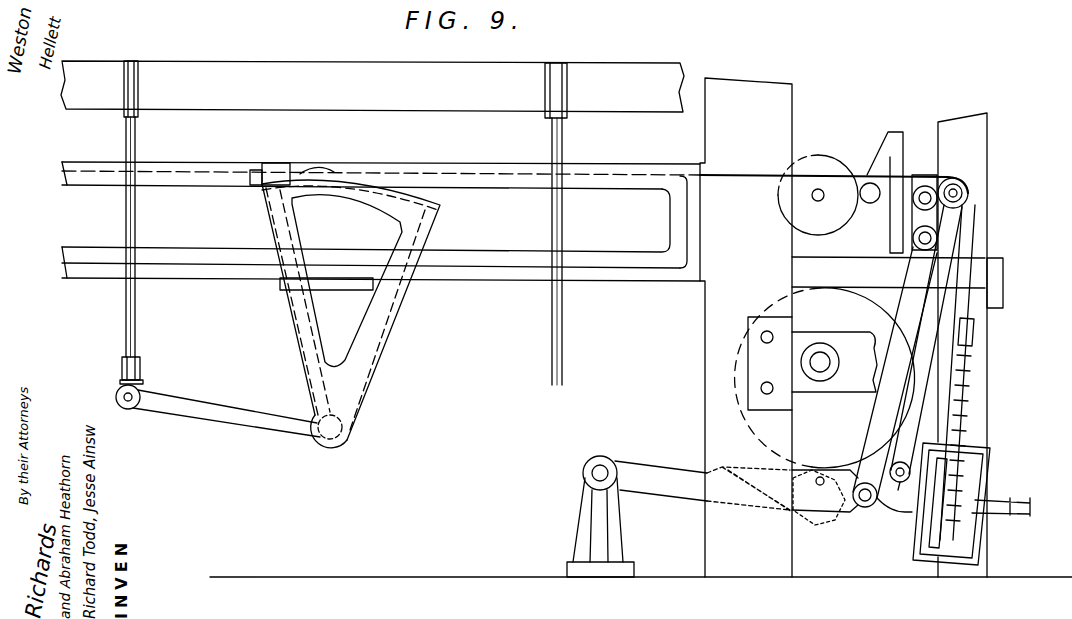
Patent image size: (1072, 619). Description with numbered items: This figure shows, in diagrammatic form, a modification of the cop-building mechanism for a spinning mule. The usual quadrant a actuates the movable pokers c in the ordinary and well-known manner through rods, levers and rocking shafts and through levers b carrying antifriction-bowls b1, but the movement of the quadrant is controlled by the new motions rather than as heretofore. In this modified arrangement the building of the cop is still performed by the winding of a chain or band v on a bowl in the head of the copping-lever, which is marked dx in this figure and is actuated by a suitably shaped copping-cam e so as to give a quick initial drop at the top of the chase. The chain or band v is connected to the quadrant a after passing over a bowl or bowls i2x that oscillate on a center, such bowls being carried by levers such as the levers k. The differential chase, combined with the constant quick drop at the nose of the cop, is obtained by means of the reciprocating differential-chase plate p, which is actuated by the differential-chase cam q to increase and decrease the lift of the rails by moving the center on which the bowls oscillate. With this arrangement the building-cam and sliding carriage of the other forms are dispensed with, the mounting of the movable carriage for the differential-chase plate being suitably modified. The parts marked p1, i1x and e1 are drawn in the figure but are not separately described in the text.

The quadrant a is at (388, 337).
The levers b is at (282, 392).
The antifriction-bowls b1 is at (143, 387).
The movable pokers c is at (141, 139).
The differential-chase cam q is at (814, 170).
The reciprocating differential-chase plate p is at (930, 140).
The guide rollers p1 is at (924, 219).
The bowl or bowls i2x is at (968, 186).
The pulley spindle i1x is at (956, 196).
The levers k is at (922, 407).
The chain or band v is at (965, 427).
The copping-lever dx is at (887, 503).
The copping-cam e is at (825, 378).
The crank plate e1 is at (866, 306).